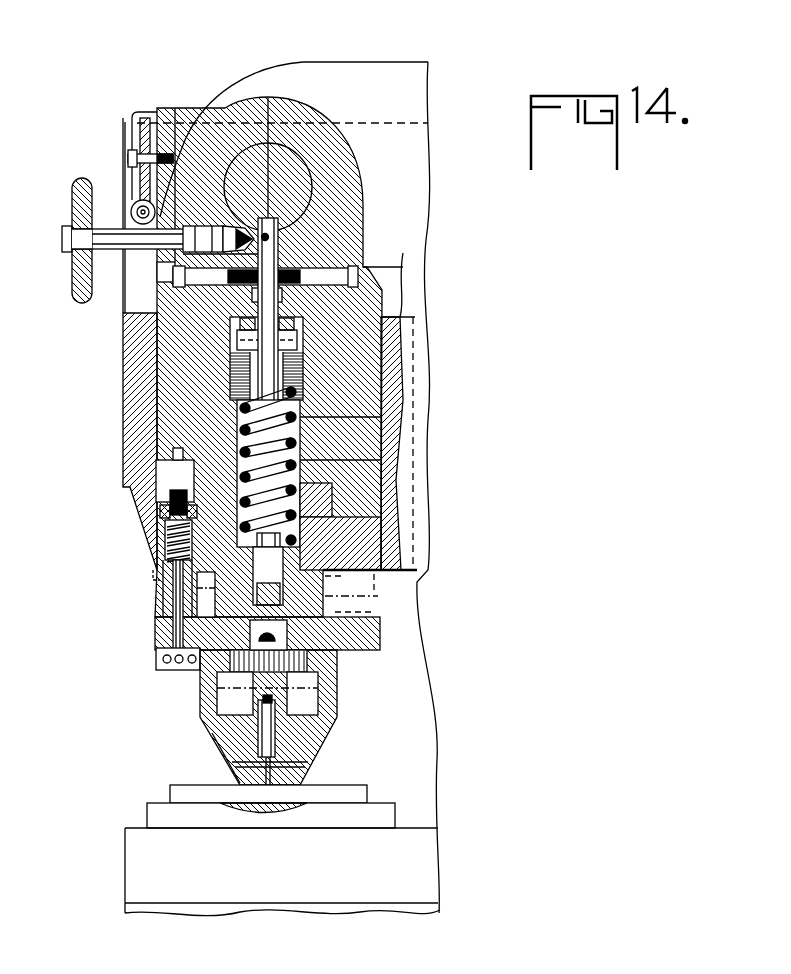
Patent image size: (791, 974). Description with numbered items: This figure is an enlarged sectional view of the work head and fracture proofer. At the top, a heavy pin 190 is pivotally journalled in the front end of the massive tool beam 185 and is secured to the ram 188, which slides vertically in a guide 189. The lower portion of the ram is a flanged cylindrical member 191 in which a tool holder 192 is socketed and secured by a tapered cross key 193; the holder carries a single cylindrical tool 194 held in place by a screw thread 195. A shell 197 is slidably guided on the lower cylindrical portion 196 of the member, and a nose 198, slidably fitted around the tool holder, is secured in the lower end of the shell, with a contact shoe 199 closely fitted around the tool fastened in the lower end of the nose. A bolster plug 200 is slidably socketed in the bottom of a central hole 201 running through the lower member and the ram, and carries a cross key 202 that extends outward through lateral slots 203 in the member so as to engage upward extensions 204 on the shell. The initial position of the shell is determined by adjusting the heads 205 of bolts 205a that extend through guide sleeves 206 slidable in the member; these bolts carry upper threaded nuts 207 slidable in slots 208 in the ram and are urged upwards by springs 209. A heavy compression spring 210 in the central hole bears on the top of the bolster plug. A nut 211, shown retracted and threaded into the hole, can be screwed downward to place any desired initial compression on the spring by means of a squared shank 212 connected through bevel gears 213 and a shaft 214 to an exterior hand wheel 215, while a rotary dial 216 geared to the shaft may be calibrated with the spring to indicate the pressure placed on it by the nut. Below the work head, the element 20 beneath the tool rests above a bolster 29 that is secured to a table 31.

The tool beam 185 is at (374, 66).
The heavy pin 190 is at (307, 185).
The ram 188 is at (163, 408).
The guide 189 is at (132, 443).
The rotary dial 216 is at (133, 183).
The shaft 214 is at (108, 228).
The hand wheel 215 is at (72, 293).
The bevel gears 213 is at (200, 272).
The squared shank 212 is at (273, 351).
The nut 211 is at (310, 311).
The central hole 201 is at (297, 460).
The heavy compression spring 210 is at (297, 420).
The flanged cylindrical member 191 is at (367, 530).
The upward extensions 204 is at (286, 483).
The lateral slots 203 is at (300, 557).
The bolster plug 200 is at (349, 584).
The cross key 202 is at (351, 605).
The slots 208 is at (162, 473).
The upper threaded nuts 207 is at (163, 508).
The springs 209 is at (170, 525).
The guide sleeves 206 is at (155, 575).
The bolts 205a is at (177, 593).
The lower cylindrical portion 196 is at (220, 598).
The heads 205 is at (160, 665).
The shell 197 is at (200, 685).
The tool holder 192 is at (297, 667).
The tapered cross key 193 is at (262, 644).
The screw thread 195 is at (287, 703).
The cylindrical tool 194 is at (318, 755).
The nose 198 is at (210, 740).
The contact shoe 199 is at (240, 777).
The work 20 is at (350, 793).
The bolster 29 is at (152, 806).
The table 31 is at (128, 832).